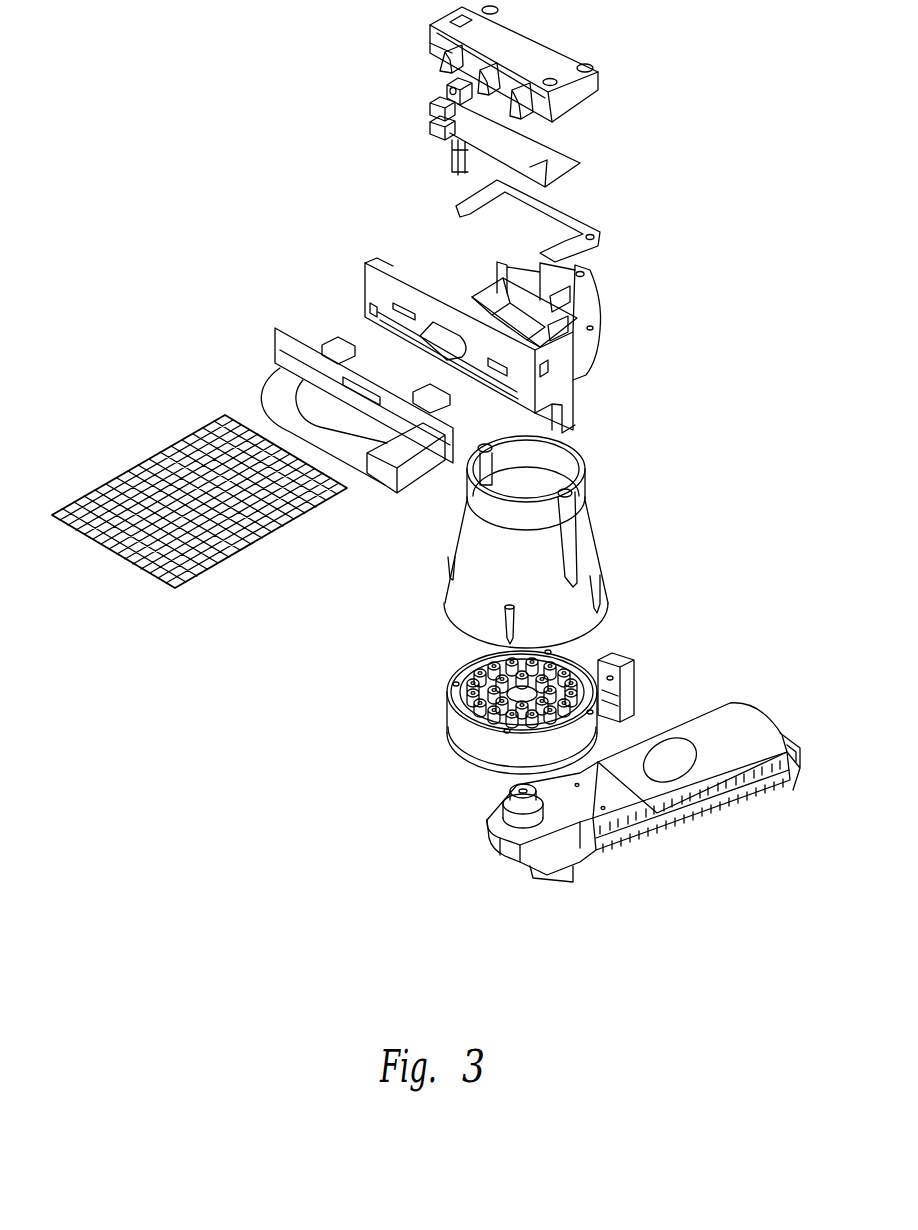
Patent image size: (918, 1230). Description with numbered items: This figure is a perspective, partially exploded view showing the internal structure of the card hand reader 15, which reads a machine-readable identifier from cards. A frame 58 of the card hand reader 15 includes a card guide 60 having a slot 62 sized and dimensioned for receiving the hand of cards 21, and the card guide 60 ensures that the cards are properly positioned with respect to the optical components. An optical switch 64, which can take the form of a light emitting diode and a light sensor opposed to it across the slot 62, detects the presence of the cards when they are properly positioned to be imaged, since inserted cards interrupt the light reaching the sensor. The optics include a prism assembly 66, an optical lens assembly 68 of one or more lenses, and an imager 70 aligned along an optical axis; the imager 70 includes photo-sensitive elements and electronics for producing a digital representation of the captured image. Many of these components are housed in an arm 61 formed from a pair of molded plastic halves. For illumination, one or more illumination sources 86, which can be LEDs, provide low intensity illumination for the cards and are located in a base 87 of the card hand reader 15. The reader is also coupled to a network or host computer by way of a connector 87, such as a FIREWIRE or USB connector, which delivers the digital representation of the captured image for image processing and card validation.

The card hand reader 15 is at (688, 340).
The hand of cards 21 is at (96, 561).
The frame 58 is at (585, 268).
The card guide 60 is at (553, 371).
The arm 61 is at (697, 730).
The slot 62 is at (375, 478).
The optical switch 64 is at (458, 104).
The prism assembly 66 is at (416, 151).
The optical lens assembly 68 is at (517, 698).
The imager 70 is at (494, 818).
The illumination sources 86 is at (592, 672).
The base 87 is at (787, 738).